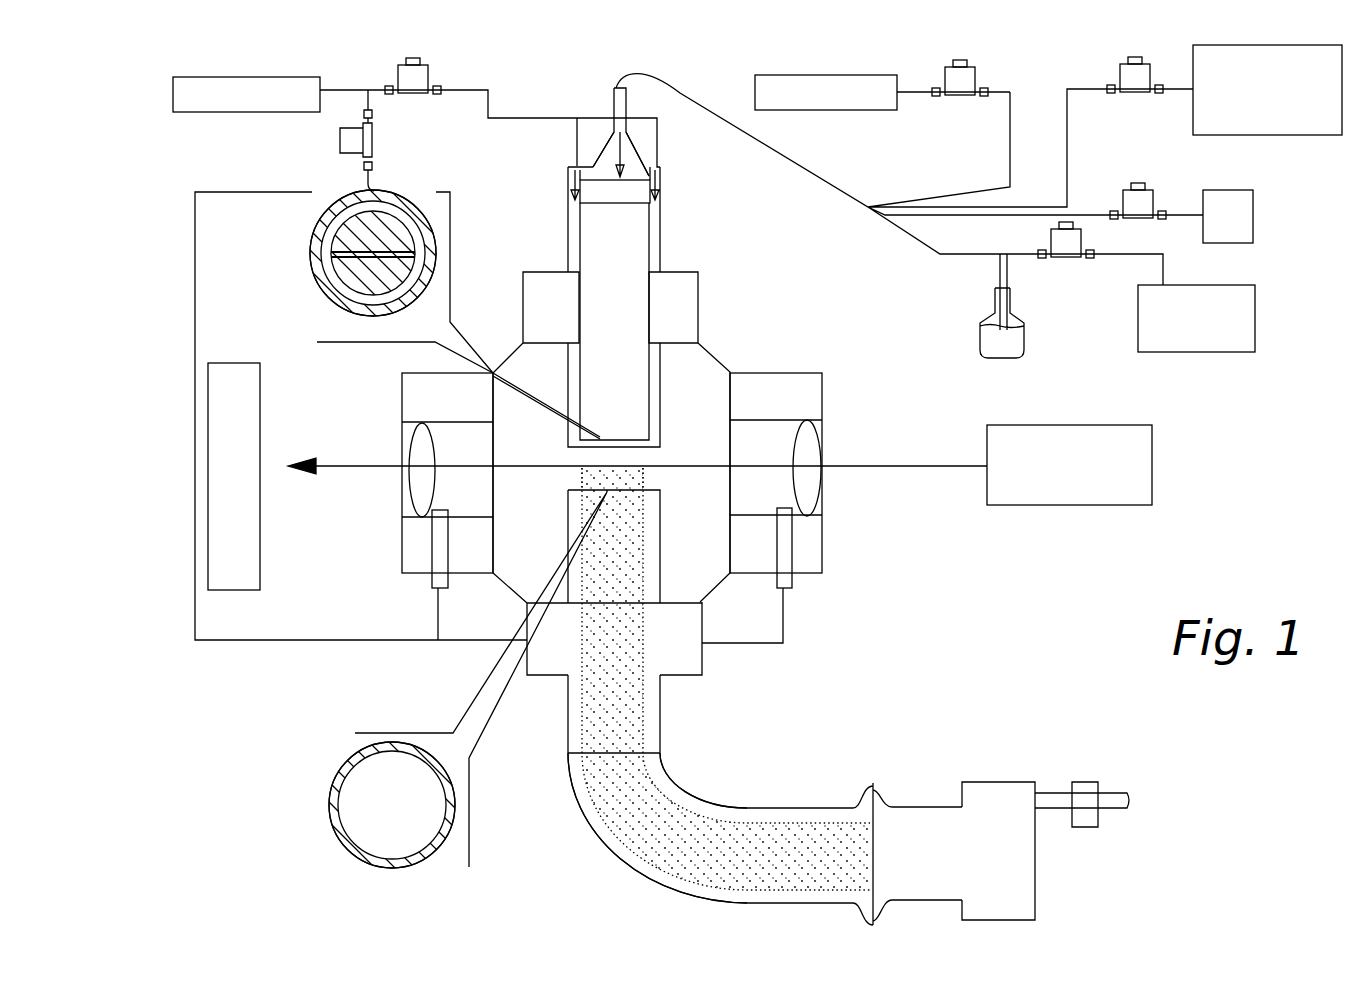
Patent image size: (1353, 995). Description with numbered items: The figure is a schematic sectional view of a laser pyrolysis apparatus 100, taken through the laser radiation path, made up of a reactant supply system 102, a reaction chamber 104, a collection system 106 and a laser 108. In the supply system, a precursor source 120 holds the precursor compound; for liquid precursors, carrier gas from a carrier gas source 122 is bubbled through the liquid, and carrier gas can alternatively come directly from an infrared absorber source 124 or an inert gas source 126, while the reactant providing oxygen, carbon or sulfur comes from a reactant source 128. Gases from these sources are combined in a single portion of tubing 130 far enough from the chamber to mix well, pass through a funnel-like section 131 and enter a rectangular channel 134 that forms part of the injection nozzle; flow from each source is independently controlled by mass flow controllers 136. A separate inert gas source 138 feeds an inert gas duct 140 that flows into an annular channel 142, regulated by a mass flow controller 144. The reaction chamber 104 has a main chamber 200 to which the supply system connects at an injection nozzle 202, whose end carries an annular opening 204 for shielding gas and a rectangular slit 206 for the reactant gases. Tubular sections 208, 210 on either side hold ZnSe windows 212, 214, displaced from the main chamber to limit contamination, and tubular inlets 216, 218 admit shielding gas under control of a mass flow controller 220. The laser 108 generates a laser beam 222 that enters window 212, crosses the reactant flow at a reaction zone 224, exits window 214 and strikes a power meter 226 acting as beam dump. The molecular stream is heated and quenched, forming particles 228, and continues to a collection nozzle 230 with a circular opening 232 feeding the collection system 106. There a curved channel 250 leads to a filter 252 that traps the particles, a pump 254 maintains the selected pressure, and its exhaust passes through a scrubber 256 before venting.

The pyrolysis apparatus 100 is at (352, 388).
The reactant supply system 102 is at (833, 219).
The reaction chamber 104 is at (716, 342).
The collection system 106 is at (689, 761).
The laser 108 is at (1044, 506).
The precursor source 120 is at (1024, 342).
The carrier gas source 122 is at (1208, 350).
The infrared absorber source 124 is at (1300, 136).
The inert gas source 126 is at (755, 82).
The reactant source 128 is at (1248, 200).
The tubing 130 is at (623, 80).
The funnel 131 is at (598, 150).
The rectangular channel 134 is at (636, 185).
The mass flow controller 136 is at (968, 65).
The inert gas source 138 is at (180, 113).
The inert gas duct 140 is at (568, 177).
The annular channel 142 is at (590, 222).
The mass flow controller 144 is at (413, 95).
The main chamber 200 is at (528, 360).
The injection nozzle 202 is at (376, 196).
The annular opening 204 is at (330, 218).
The rectangular slit 206 is at (334, 256).
The tubular section 208 is at (810, 533).
The tubular section 210 is at (410, 535).
The window 212 is at (808, 436).
The window 214 is at (418, 470).
The tubular inlet 216 is at (787, 578).
The tubular inlet 218 is at (440, 580).
The mass flow controller 220 is at (340, 153).
The laser beam 222 is at (880, 470).
The reaction zone 224 is at (647, 468).
The power meter 226 is at (240, 572).
The particles 228 is at (648, 480).
The collection nozzle 230 is at (568, 495).
The circular opening 232 is at (350, 806).
The curved channel 250 is at (692, 790).
The filter 252 is at (882, 797).
The pump 254 is at (995, 782).
The scrubber 256 is at (1084, 782).